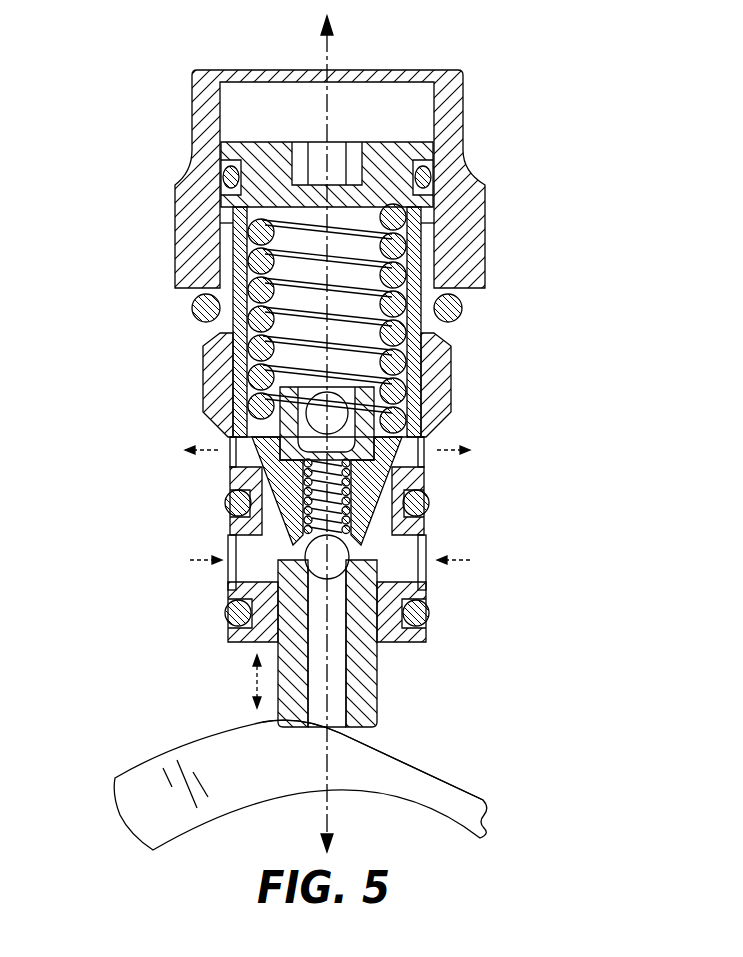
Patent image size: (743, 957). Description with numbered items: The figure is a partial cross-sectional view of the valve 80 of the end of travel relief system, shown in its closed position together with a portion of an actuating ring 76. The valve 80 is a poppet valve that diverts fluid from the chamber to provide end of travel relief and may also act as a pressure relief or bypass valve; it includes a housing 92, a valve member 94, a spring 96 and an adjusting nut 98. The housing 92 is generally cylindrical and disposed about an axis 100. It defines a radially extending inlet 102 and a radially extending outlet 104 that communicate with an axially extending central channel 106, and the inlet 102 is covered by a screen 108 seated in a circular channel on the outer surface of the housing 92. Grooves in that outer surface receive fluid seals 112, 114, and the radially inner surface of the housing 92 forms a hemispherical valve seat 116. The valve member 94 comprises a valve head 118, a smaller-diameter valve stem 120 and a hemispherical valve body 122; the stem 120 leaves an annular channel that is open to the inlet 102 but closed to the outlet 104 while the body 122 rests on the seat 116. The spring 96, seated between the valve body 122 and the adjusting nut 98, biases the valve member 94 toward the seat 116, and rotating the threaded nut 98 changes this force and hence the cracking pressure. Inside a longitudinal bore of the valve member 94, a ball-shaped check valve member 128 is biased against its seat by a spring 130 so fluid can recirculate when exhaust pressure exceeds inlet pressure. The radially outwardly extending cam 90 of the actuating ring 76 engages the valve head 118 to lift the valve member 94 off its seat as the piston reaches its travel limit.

The actuating ring 76 is at (474, 797).
The valve 80 is at (525, 237).
The cam 90 is at (384, 763).
The housing 92 is at (203, 378).
The valve member 94 is at (388, 673).
The spring 96 is at (422, 408).
The adjusting nut 98 is at (392, 141).
The axis 100 is at (326, 60).
The inlet 102 is at (236, 568).
The outlet 104 is at (230, 461).
The central channel 106 is at (376, 556).
The screen 108 is at (413, 562).
The fluid seal 112 is at (226, 510).
The fluid seal 114 is at (227, 613).
The valve seat 116 is at (392, 474).
The valve head 118 is at (362, 703).
The valve stem 120 is at (402, 530).
The valve body 122 is at (400, 527).
The check valve member 128 is at (318, 572).
The spring 130 is at (285, 443).